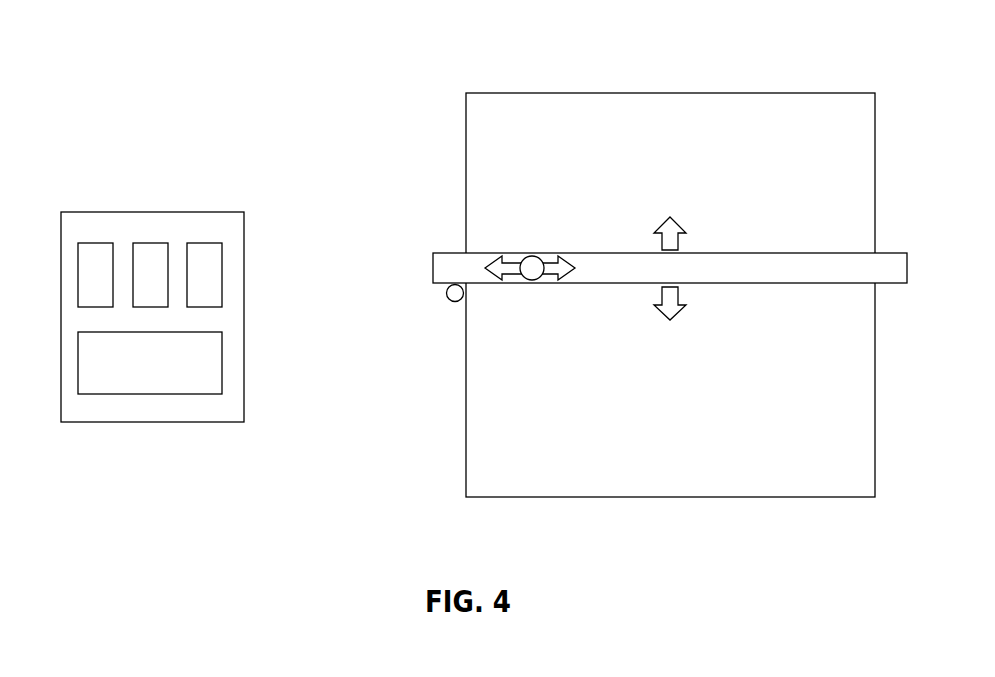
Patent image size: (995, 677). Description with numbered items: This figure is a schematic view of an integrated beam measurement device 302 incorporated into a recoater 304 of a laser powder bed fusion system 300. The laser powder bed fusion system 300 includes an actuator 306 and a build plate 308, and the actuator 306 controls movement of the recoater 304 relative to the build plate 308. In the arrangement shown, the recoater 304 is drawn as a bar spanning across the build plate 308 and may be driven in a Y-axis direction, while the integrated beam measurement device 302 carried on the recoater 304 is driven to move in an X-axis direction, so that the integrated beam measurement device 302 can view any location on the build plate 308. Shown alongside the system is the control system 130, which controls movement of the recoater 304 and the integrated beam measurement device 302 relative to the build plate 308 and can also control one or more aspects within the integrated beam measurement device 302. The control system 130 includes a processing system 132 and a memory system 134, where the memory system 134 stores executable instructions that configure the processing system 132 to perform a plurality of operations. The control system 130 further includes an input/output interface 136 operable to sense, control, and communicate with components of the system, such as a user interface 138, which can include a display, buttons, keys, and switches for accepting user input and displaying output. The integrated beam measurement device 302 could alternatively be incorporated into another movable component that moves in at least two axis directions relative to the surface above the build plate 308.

The control system 130 is at (152, 329).
The processing system 132 is at (95, 242).
The memory system 134 is at (148, 242).
The input/output (I/O) interface 136 is at (205, 242).
The user interface 138 is at (173, 377).
The laser powder bed fusion system 300 is at (617, 258).
The integrated beam measurement device 302 is at (535, 273).
The recoater 304 is at (513, 248).
The actuator 306 is at (452, 303).
The build plate 308 is at (547, 93).